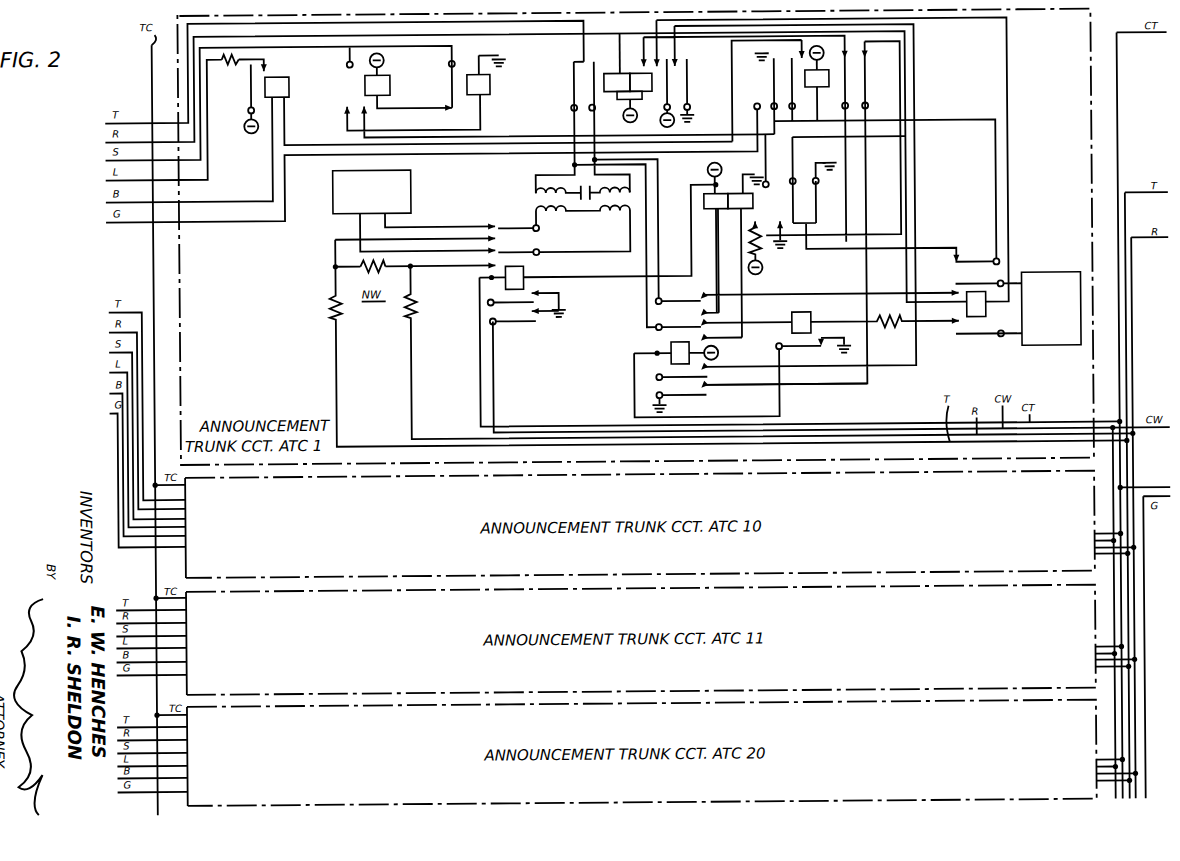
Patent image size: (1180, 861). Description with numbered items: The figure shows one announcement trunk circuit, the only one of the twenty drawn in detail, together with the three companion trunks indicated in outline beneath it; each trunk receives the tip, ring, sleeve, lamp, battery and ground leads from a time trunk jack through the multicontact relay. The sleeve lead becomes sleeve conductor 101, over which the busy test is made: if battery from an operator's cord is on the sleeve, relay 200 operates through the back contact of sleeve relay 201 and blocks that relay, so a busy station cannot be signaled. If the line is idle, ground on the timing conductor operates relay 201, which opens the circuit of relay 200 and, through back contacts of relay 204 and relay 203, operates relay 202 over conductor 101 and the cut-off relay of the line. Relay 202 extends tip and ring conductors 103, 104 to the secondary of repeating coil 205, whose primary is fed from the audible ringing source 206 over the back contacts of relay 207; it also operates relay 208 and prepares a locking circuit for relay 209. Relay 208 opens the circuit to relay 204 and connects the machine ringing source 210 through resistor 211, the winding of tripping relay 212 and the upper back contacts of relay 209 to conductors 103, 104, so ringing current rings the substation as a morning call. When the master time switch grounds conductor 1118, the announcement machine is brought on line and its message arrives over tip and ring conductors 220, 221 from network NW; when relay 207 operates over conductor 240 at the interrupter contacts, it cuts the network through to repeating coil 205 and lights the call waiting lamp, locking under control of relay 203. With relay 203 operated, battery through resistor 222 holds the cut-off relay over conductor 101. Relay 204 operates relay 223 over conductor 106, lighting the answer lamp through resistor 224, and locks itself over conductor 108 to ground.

The sleeve conductor 101 is at (205, 158).
The tip conductor 103 is at (587, 24).
The ring conductor 104 is at (528, 37).
The conductor 106 is at (273, 185).
The conductor 108 is at (287, 226).
The relay 200 is at (493, 95).
The sleeve relay 201 is at (393, 86).
The sleeve relay 202 is at (612, 100).
The relay 203 is at (729, 196).
The relay 204 is at (832, 78).
The repeating coil 205 is at (537, 207).
The audible ringing source 206 is at (413, 186).
The relay 207 is at (525, 272).
The relay 208 is at (987, 318).
The relay 209 is at (672, 351).
The machine ringing source 210 is at (1050, 352).
The resistor 211 is at (890, 331).
The tripping relay 212 is at (812, 319).
The tip conductor 220 is at (337, 371).
The ring conductor 221 is at (412, 371).
The resistor 222 is at (760, 262).
The relay 223 is at (292, 88).
The resistor 224 is at (232, 66).
The conductor 240 is at (481, 369).
The conductor 1118 is at (1148, 495).